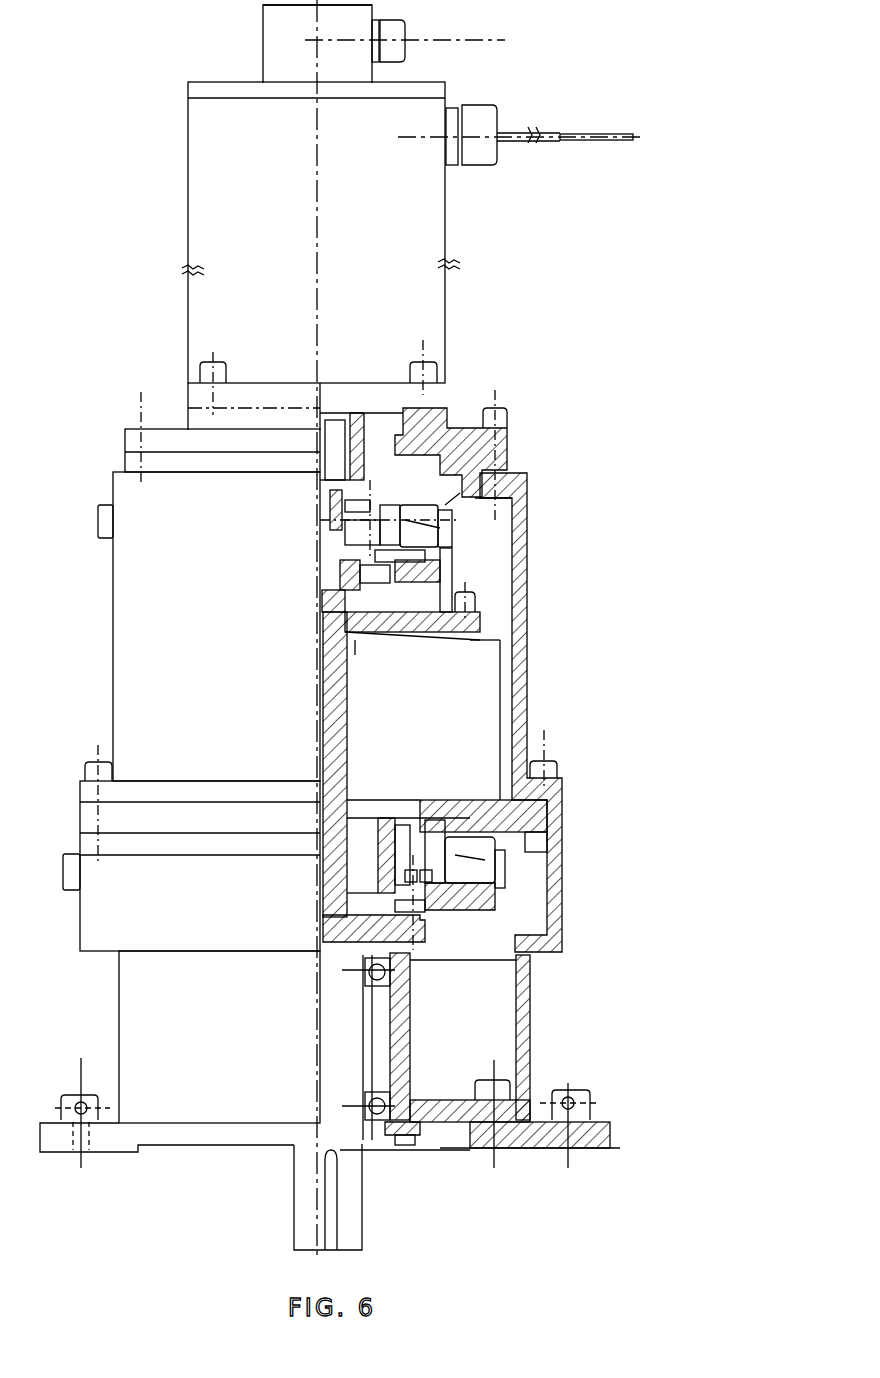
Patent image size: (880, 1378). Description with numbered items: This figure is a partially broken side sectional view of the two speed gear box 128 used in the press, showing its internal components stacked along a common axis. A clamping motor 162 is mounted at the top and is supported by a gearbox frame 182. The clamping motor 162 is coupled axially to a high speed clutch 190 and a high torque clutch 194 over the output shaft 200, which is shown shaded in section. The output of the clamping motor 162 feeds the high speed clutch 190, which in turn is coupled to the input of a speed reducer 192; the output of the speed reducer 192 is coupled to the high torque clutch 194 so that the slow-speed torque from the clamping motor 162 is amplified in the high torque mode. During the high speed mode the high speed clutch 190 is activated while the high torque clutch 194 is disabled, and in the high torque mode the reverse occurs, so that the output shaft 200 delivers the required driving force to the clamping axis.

The two speed gear box 128 is at (683, 72).
The clamping motor 162 is at (210, 237).
The gearbox frame 182 is at (137, 625).
The high speed clutch 190 is at (440, 535).
The speed reducer 192 is at (485, 722).
The high torque clutch 194 is at (490, 867).
The output shaft 200 is at (336, 690).